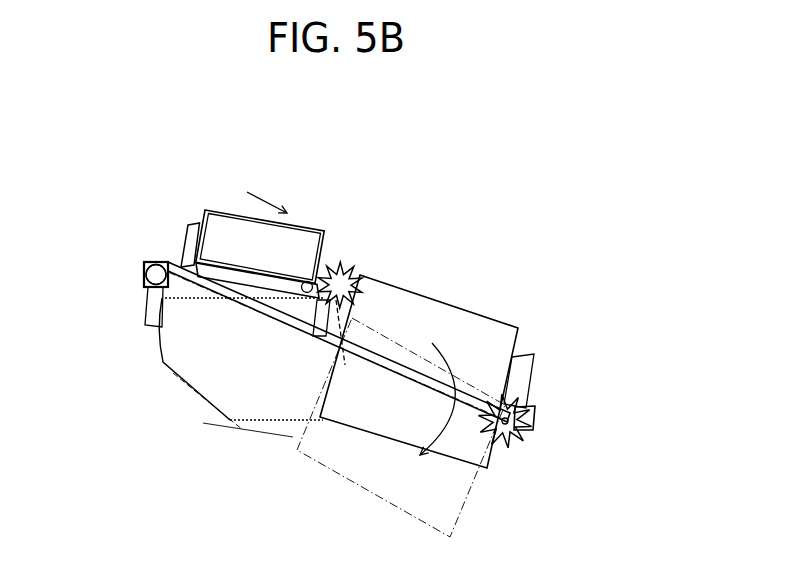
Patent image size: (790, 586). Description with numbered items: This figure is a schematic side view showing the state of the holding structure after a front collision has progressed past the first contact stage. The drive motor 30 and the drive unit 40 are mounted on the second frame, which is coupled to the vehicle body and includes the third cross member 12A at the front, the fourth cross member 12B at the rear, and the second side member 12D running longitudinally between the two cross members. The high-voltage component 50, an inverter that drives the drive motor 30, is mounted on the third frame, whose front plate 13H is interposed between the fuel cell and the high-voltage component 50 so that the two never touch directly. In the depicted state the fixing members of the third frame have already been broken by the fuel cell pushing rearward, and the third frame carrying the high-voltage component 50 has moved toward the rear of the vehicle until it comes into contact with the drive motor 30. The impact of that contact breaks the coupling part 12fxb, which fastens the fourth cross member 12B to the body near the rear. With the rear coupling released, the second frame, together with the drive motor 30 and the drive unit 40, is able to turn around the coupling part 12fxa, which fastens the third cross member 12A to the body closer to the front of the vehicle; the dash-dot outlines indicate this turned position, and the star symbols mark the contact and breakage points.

The third cross member 12A is at (153, 262).
The fourth cross member 12B is at (537, 422).
The second side member 12D is at (270, 320).
The coupling part 12fxa is at (143, 283).
The coupling part 12fxb is at (515, 408).
The front plate 13H is at (190, 223).
The drive motor 30 is at (480, 315).
The drive unit 40 is at (255, 388).
The high-voltage component 50 is at (315, 225).